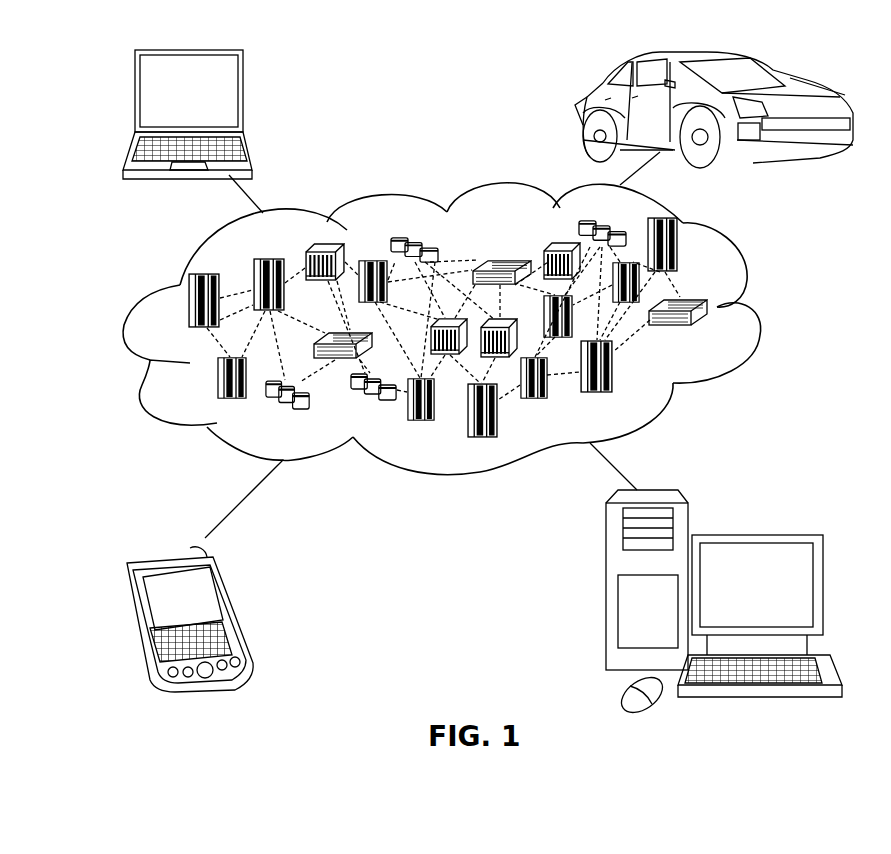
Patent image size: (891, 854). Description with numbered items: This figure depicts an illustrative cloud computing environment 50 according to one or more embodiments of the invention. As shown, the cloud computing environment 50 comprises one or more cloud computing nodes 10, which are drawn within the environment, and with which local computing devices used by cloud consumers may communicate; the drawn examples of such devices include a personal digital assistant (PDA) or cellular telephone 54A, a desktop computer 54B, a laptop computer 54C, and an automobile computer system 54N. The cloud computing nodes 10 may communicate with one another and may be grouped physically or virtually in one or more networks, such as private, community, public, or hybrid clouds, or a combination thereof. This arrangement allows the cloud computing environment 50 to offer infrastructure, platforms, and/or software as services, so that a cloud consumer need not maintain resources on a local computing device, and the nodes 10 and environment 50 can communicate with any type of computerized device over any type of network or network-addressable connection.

The cloud computing node 10 is at (714, 334).
The cloud computing environment 50 is at (758, 310).
The personal digital assistant (PDA) or cellular telephone 54A is at (233, 608).
The desktop computer 54B is at (754, 533).
The laptop computer 54C is at (245, 98).
The automobile computer system 54N is at (582, 110).